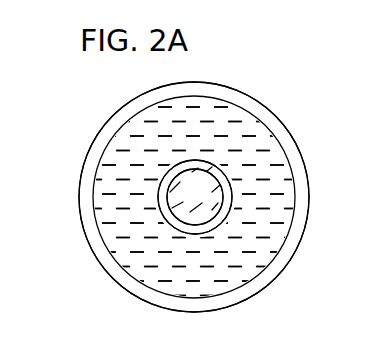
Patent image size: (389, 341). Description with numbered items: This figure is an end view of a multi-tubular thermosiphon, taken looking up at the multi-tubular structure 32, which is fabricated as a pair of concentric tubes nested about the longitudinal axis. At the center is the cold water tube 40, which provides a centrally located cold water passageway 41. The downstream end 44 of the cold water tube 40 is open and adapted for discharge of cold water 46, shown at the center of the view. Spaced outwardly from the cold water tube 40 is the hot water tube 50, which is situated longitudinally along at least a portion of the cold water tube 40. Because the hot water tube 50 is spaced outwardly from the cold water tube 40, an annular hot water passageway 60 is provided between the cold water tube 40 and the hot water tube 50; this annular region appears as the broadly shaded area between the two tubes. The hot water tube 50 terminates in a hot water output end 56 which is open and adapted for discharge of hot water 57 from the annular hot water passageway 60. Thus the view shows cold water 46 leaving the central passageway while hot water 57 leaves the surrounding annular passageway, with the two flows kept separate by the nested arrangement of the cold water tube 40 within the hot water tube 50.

The multi-tubular structure 32 is at (257, 70).
The hot water output end 56 is at (80, 192).
The hot water tube 50 is at (83, 218).
The hot water 57 is at (251, 188).
The annular hot water passageway 60 is at (130, 177).
The cold water tube 40 is at (164, 217).
The downstream end 44 is at (190, 233).
The cold water passageway 41 is at (193, 179).
The cold water 46 is at (199, 186).